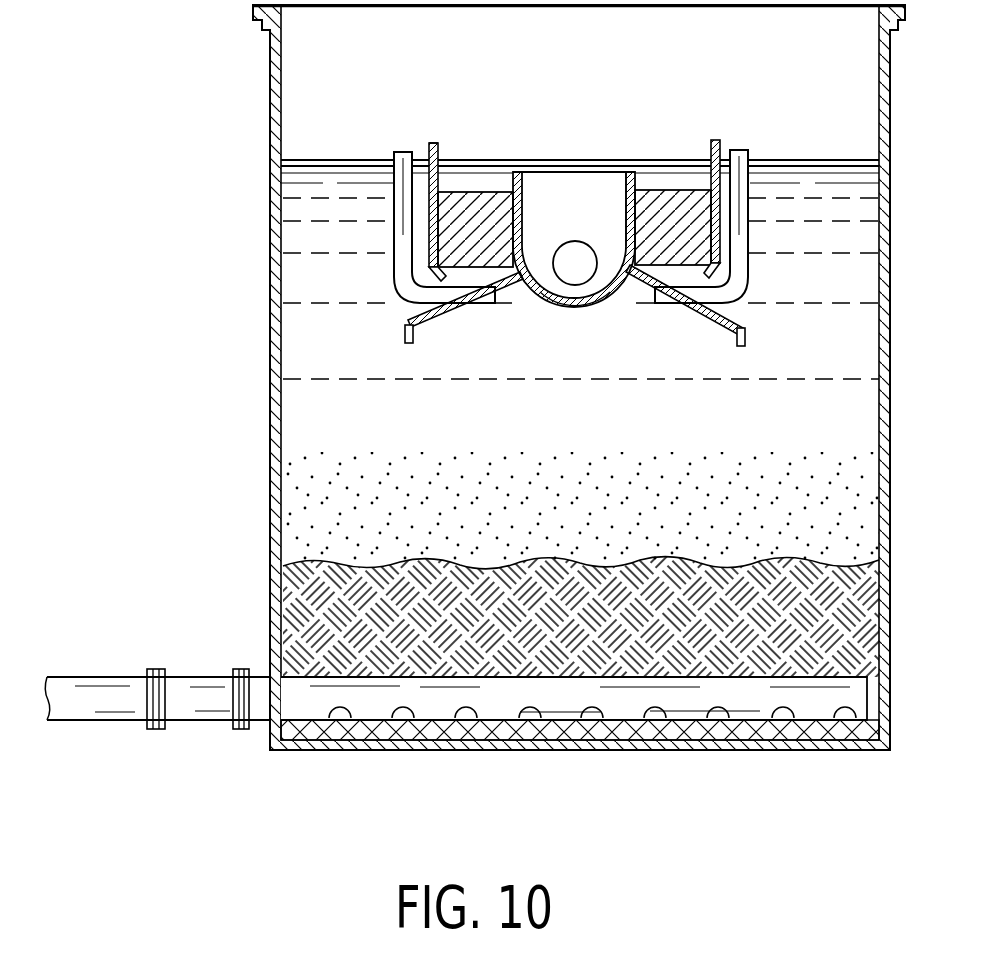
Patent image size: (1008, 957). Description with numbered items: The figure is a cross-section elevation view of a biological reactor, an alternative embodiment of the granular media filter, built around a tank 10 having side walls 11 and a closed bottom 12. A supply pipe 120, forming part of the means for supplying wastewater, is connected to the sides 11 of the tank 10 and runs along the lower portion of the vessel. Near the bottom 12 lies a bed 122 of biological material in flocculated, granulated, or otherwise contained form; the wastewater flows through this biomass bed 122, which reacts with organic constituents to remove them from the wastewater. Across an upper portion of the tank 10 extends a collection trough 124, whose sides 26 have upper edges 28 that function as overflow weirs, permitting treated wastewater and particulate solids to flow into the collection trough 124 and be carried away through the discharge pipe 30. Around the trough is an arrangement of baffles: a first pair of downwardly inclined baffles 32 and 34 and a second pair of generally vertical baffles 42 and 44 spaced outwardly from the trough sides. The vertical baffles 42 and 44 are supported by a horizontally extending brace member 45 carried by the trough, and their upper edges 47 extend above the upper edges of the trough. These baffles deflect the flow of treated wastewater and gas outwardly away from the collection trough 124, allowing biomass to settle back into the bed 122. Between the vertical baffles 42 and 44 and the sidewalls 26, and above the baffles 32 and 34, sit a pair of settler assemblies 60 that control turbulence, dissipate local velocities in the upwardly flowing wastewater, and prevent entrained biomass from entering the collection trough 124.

The tank 10 is at (156, 259).
The side walls 11 is at (272, 397).
The closed bottom 12 is at (538, 748).
The sides 26 is at (627, 197).
The upper edges 28 is at (612, 172).
The discharge pipe 30 is at (562, 272).
The baffle 32 is at (447, 327).
The baffle 34 is at (720, 334).
The baffle 42 is at (438, 150).
The baffle 44 is at (704, 147).
The brace member 45 is at (517, 172).
The upper edges 47 is at (428, 140).
The settler assemblies 60 is at (473, 200).
The supply pipe 120 is at (102, 692).
The bed of biological material 122 is at (300, 577).
The collection trough 124 is at (592, 305).